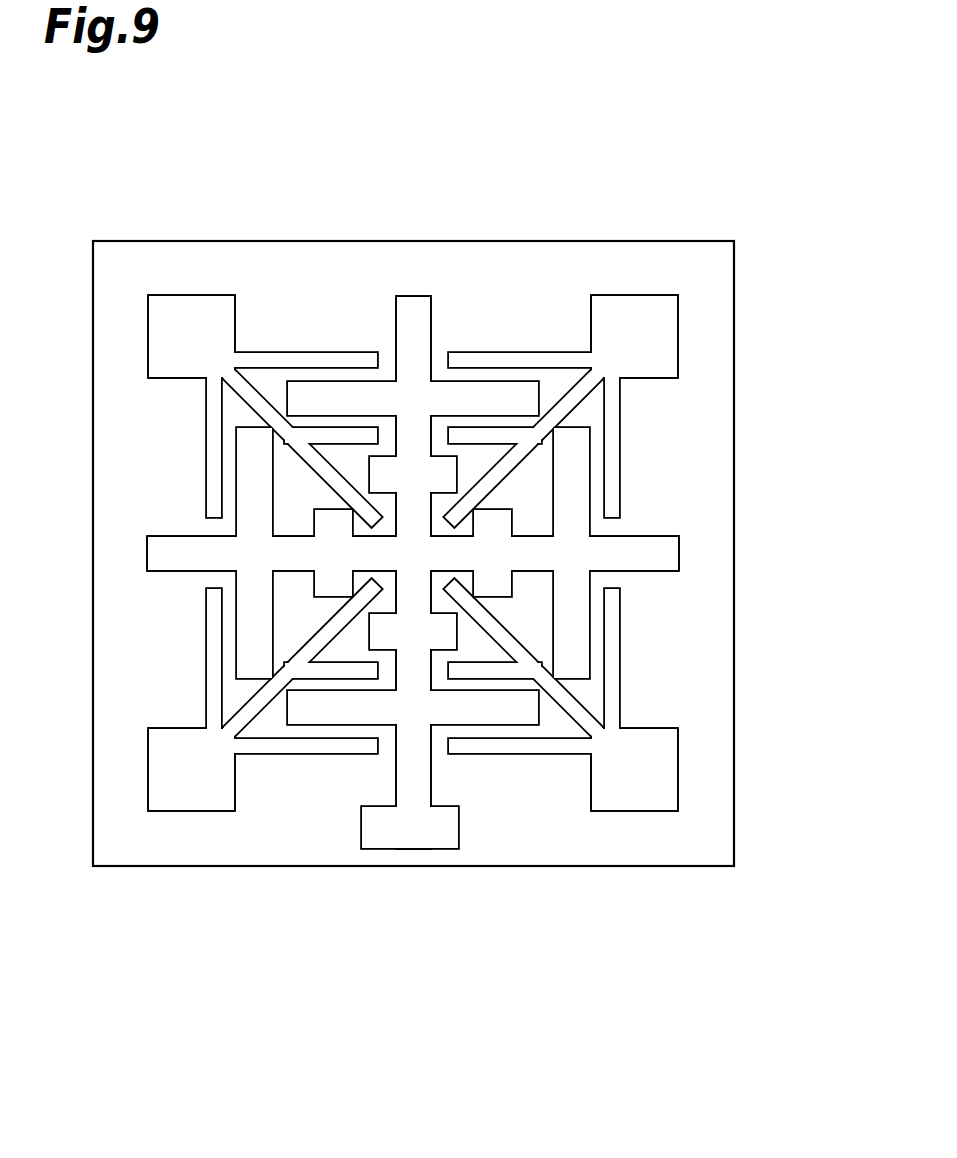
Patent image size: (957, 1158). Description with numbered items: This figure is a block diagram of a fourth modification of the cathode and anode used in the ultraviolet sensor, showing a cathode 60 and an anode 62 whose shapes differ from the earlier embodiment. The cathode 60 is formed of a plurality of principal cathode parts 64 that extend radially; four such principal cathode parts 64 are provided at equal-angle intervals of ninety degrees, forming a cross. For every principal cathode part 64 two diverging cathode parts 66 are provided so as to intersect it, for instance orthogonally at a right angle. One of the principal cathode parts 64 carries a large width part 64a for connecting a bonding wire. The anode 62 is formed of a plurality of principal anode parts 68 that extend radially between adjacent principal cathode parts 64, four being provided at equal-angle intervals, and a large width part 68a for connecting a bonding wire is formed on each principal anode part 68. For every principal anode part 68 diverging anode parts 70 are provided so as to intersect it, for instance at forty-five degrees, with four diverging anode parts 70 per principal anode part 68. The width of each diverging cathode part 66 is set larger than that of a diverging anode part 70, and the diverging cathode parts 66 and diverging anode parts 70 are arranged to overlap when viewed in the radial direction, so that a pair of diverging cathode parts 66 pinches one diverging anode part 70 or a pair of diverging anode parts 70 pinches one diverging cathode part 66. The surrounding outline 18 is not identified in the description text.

The substrate 18 is at (735, 843).
The cathode 60 is at (386, 777).
The anode 62 is at (147, 324).
The principal cathode part 64 is at (187, 573).
The large width part 64a is at (398, 838).
The diverging cathode part 66 is at (441, 456).
The principal anode part 68 is at (250, 378).
The large width part 68a is at (192, 312).
The diverging anode part 70 is at (318, 427).